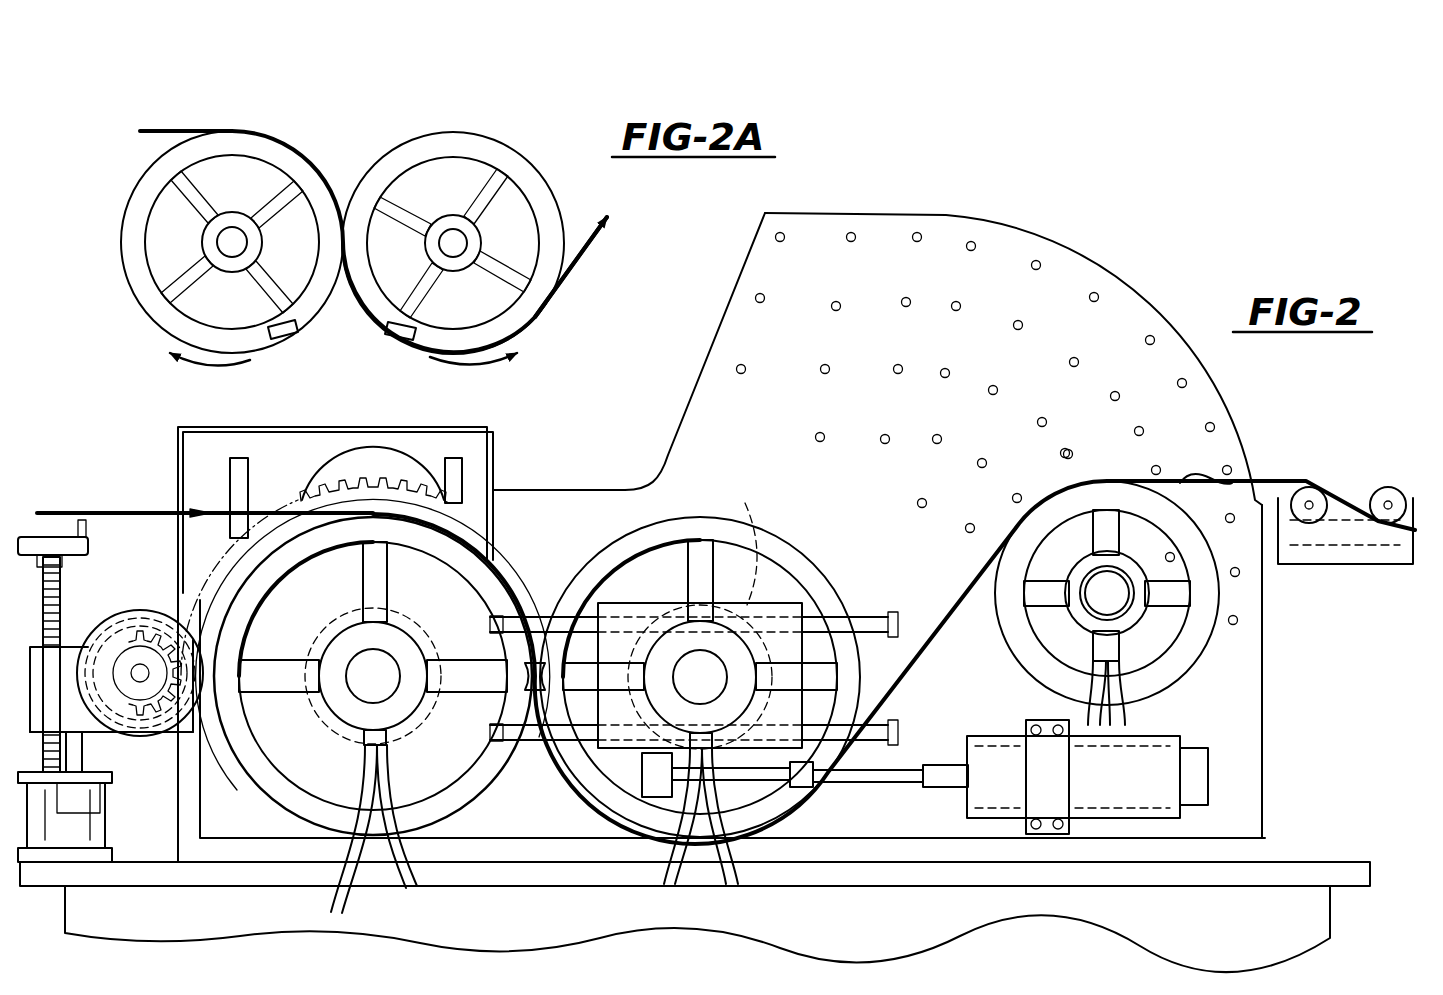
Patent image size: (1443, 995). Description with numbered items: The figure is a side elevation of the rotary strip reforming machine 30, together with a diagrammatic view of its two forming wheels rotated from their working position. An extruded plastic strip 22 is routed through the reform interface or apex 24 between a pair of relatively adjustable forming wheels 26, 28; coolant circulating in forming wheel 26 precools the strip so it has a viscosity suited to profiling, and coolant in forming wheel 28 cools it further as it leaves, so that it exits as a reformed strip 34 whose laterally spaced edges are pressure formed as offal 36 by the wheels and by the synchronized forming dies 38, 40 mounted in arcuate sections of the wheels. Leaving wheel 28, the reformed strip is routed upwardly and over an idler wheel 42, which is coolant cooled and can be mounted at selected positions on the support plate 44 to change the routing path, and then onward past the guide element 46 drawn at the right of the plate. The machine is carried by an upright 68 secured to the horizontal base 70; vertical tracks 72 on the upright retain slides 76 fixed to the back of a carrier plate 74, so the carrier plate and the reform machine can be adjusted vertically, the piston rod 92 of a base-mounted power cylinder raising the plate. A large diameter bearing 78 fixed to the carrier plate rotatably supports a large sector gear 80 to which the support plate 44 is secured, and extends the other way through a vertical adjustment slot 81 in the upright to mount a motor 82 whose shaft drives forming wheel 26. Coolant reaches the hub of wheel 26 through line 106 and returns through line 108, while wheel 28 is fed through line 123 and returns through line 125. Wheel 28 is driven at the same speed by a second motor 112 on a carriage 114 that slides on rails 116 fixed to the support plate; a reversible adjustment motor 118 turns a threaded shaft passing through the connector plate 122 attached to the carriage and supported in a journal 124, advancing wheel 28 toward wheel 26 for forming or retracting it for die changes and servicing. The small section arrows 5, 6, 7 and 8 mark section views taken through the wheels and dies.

In FIG. 2, the section line 5- 5 is at (373, 440).
In FIG. 2, the section line 6- 6 is at (478, 672).
In FIG. 2, the section line 7- 7 is at (738, 795).
In FIG. 2A, the section line 8- 8 is at (280, 245).
In FIG. 2, the strip 22 is at (146, 512).
In FIG. 2A, the reform interface 24 is at (346, 177).
In FIG. 2, the reform interface 24 is at (562, 645).
In FIG. 2A, the forming wheel 26 is at (259, 140).
In FIG. 2, the forming wheel 26 is at (442, 534).
In FIG. 2A, the forming wheel 28 is at (530, 167).
In FIG. 2, the forming wheel 28 is at (638, 542).
In FIG. 2, the rotary strip reforming machine 30 is at (877, 401).
In FIG. 2A, the reformed strip 34 is at (558, 322).
In FIG. 2, the reformed strip 34 is at (942, 631).
In FIG. 2, the offal 36 is at (1225, 478).
In FIG. 2A, the forming die 38 is at (280, 342).
In FIG. 2, the forming die 38 is at (525, 664).
In FIG. 2A, the forming die 40 is at (396, 342).
In FIG. 2, the forming die 40 is at (612, 625).
In FIG. 2, the idler wheel 42 is at (1160, 686).
In FIG. 2, the support plate 44 is at (1170, 337).
In FIG. 2, the roller tray 46 is at (1358, 486).
In FIG. 2, the upright 68 is at (272, 432).
In FIG. 2, the base 70 is at (950, 878).
In FIG. 2, the vertical tracks 72 is at (240, 456).
In FIG. 2, the carrier plate 74 is at (234, 712).
In FIG. 2, the slides 76 is at (116, 828).
In FIG. 2, the bearing 78 is at (47, 534).
In FIG. 2, the sector gear 80 is at (88, 560).
In FIG. 2, the vertical adjustment slot 81 is at (360, 450).
In FIG. 2, the motor 82 is at (70, 640).
In FIG. 2, the piston rod 92 is at (1265, 812).
In FIG. 2, the line 106 is at (332, 892).
In FIG. 2, the line 108 is at (430, 893).
In FIG. 2, the second motor 112 is at (748, 515).
In FIG. 2, the carriage 114 is at (803, 605).
In FIG. 2, the rails 116 is at (893, 615).
In FIG. 2, the reversible adjustment motor 118 is at (1180, 763).
In FIG. 2, the connector plate 122 is at (826, 780).
In FIG. 2, the line 123 is at (746, 890).
In FIG. 2, the journal 124 is at (645, 775).
In FIG. 2, the line 125 is at (668, 890).